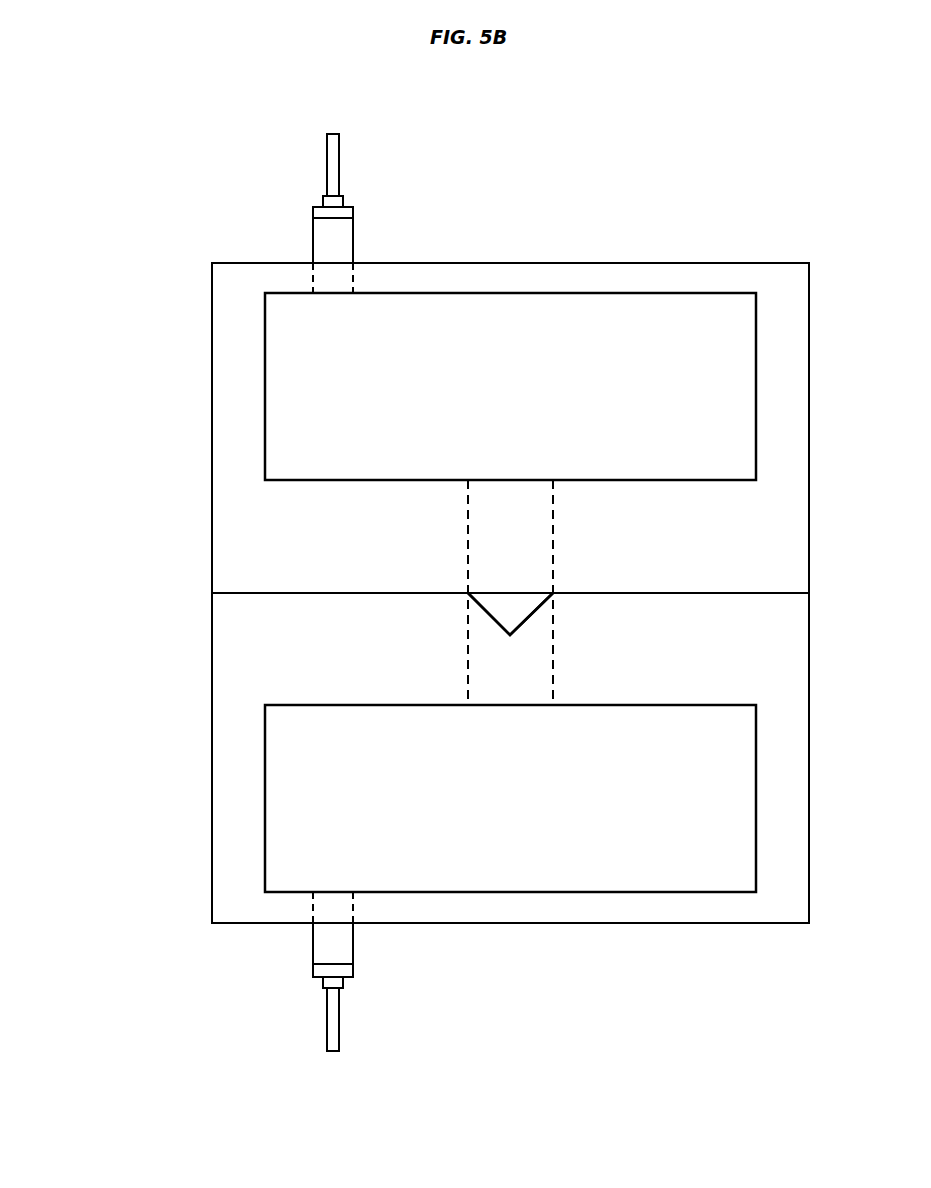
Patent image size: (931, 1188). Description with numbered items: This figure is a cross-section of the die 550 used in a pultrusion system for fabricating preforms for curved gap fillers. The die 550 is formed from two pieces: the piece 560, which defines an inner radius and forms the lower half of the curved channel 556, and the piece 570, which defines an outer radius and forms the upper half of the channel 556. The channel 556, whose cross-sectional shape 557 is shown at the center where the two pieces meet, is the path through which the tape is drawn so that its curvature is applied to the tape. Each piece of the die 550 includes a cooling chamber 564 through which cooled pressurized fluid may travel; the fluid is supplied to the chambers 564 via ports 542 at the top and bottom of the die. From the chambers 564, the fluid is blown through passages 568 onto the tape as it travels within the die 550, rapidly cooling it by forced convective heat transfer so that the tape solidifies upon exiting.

The die 550 is at (104, 541).
The piece 570 is at (212, 383).
The piece 560 is at (212, 755).
The cooling chamber 564 is at (300, 481).
The passages 568 is at (555, 551).
The curved channel 556 is at (530, 622).
The cross-sectional shape 557 is at (500, 600).
The ports 542 is at (313, 225).